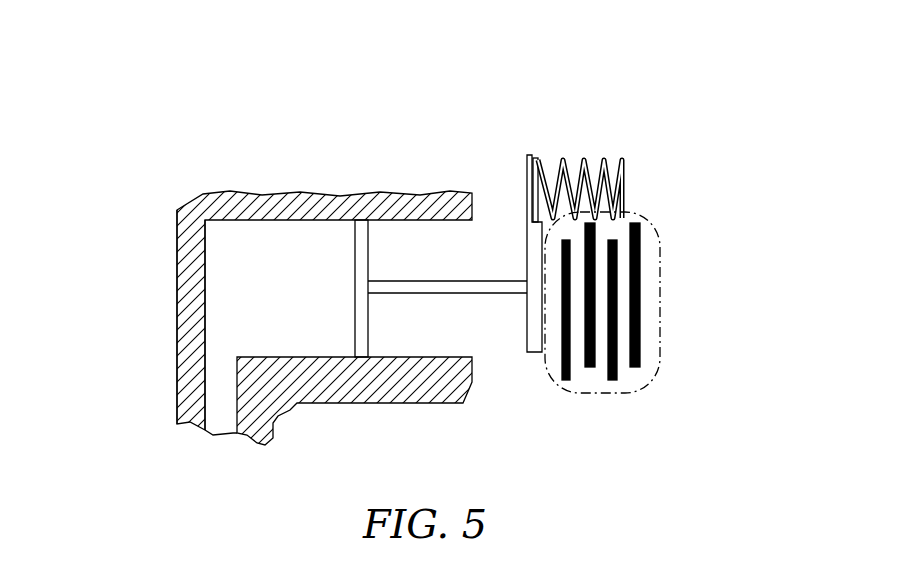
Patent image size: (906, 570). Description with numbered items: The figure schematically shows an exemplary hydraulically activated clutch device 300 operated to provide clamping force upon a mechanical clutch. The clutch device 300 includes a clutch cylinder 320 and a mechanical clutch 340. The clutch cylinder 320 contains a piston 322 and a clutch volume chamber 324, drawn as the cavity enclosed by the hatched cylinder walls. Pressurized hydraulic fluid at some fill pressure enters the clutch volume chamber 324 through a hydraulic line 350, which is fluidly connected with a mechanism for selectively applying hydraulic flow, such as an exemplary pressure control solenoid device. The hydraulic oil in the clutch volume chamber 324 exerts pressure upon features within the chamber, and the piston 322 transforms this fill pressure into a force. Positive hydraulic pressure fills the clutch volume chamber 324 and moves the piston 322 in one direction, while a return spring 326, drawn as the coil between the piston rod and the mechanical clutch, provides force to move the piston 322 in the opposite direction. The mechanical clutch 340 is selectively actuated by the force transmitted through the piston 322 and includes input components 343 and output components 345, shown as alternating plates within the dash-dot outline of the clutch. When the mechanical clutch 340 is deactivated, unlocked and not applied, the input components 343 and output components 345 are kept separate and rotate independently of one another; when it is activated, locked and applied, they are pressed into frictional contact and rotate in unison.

The clutch device 300 is at (191, 114).
The clutch cylinder 320 is at (253, 226).
The piston 322 is at (370, 258).
The clutch volume chamber 324 is at (228, 262).
The return spring 326 is at (580, 163).
The mechanical clutch 340 is at (652, 368).
The input components 343 is at (612, 372).
The output components 345 is at (593, 288).
The hydraulic line 350 is at (220, 395).